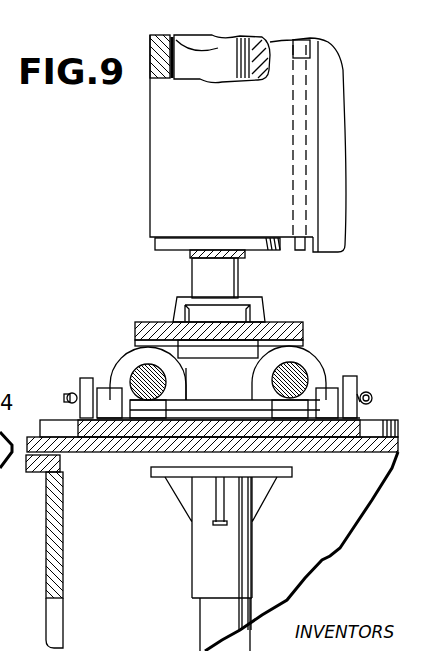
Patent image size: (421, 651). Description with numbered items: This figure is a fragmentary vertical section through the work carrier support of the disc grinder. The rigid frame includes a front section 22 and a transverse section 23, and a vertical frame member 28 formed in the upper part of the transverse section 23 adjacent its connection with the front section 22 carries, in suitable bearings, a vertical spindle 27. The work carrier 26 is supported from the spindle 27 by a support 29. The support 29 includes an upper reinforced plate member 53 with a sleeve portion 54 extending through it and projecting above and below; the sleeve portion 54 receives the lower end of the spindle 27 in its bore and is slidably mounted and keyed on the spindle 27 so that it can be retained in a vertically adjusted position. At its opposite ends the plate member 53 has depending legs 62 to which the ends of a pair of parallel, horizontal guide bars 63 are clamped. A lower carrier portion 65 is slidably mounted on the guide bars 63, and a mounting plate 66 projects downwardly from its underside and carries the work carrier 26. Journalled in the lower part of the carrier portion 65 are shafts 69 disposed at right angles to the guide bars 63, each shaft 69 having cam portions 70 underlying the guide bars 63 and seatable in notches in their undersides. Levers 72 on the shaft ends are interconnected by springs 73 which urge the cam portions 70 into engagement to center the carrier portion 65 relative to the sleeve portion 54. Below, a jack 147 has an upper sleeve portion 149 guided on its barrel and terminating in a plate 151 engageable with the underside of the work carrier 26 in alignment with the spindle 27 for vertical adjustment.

The front section 22 is at (45, 568).
The transverse section 23 is at (298, 33).
The work carrier 26 is at (92, 460).
The vertical spindle 27 is at (183, 73).
The vertical frame member 28 is at (150, 162).
The support 29 is at (328, 328).
The upper reinforced plate member 53 is at (148, 325).
The sleeve portion 54 is at (262, 311).
The depending legs 62 is at (0, 344).
The guide bars 63 is at (143, 373).
The lower carrier portion 65 is at (178, 381).
The mounting plate 66 is at (379, 398).
The shafts 69 is at (218, 400).
The cam portions 70 is at (108, 388).
The lever 72 is at (86, 380).
The springs 73 is at (68, 398).
The jack 147 is at (192, 633).
The upper sleeve portion 149 is at (244, 544).
The plate 151 is at (290, 474).